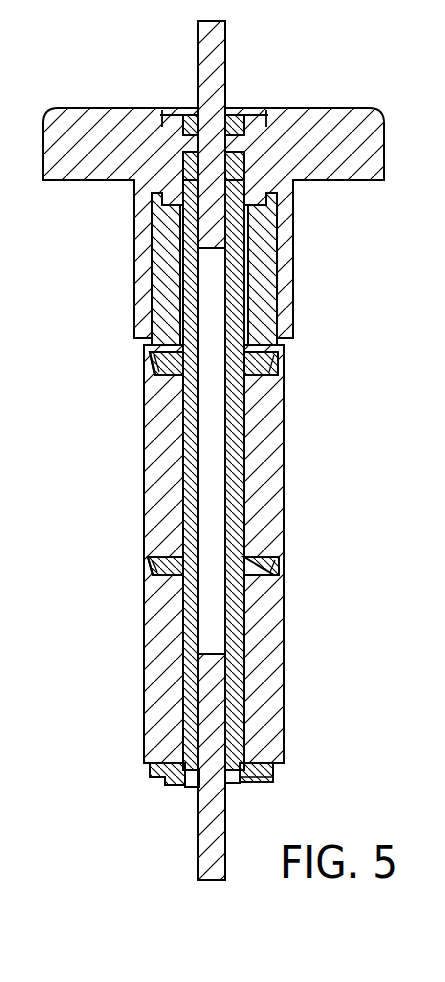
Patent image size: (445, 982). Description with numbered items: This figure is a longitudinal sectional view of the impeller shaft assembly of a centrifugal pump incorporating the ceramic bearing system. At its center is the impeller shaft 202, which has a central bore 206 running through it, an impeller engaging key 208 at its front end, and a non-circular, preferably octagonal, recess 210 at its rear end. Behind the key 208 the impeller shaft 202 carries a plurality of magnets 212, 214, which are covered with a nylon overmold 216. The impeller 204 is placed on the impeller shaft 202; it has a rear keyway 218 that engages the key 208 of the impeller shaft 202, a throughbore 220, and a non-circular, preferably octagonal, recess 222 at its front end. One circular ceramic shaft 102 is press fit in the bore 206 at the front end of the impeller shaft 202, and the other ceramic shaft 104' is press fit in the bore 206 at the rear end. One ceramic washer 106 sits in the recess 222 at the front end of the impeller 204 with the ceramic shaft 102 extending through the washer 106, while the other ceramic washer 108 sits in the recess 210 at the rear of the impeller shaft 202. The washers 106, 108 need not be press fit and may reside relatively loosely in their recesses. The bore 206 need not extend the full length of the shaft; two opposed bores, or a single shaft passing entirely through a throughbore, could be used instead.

The ceramic shaft 102 is at (225, 40).
The ceramic shaft 104' is at (172, 767).
The washer 106 is at (238, 117).
The ceramic washer 108 is at (235, 787).
The impeller shaft 202 is at (285, 468).
The impeller 204 is at (287, 240).
The central bore 206 is at (199, 509).
The impeller engaging key 208 is at (150, 291).
The non-circular recess 210 is at (185, 787).
The magnet 212 is at (277, 398).
The magnet 214 is at (277, 660).
The nylon overmold 216 is at (286, 520).
The rear keyway 218 is at (135, 223).
The throughbore 220 is at (185, 172).
The non-circular recess 222 is at (187, 117).